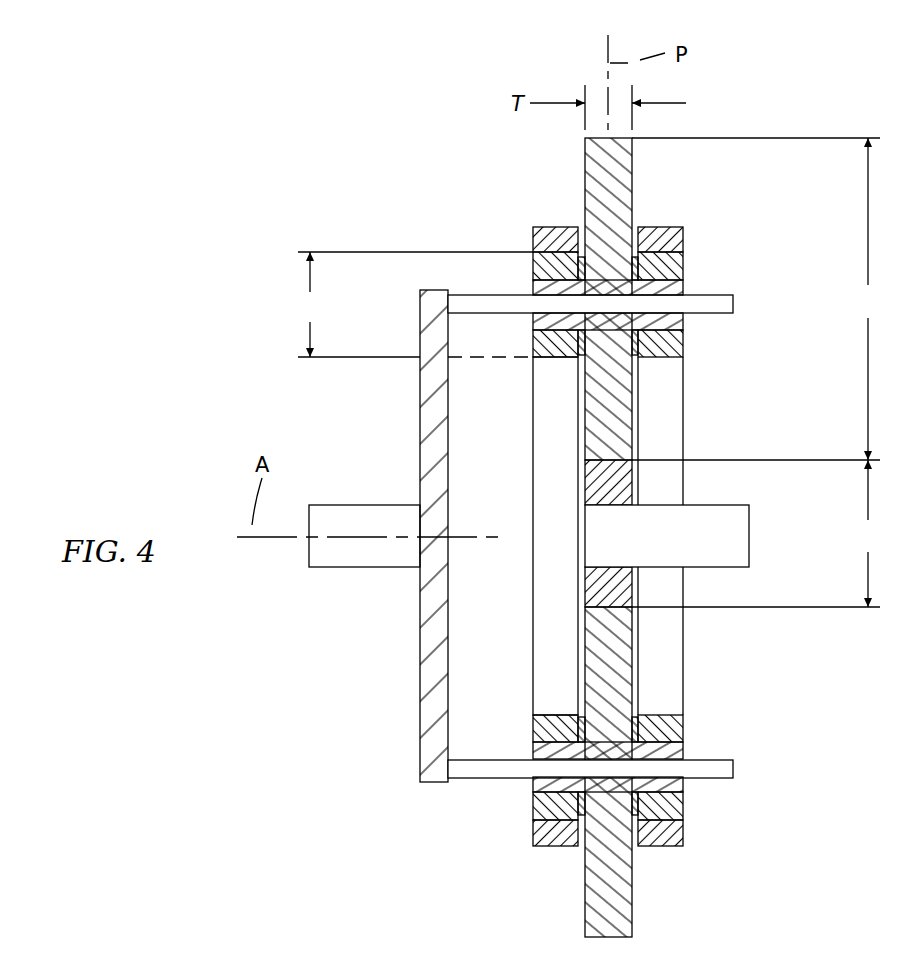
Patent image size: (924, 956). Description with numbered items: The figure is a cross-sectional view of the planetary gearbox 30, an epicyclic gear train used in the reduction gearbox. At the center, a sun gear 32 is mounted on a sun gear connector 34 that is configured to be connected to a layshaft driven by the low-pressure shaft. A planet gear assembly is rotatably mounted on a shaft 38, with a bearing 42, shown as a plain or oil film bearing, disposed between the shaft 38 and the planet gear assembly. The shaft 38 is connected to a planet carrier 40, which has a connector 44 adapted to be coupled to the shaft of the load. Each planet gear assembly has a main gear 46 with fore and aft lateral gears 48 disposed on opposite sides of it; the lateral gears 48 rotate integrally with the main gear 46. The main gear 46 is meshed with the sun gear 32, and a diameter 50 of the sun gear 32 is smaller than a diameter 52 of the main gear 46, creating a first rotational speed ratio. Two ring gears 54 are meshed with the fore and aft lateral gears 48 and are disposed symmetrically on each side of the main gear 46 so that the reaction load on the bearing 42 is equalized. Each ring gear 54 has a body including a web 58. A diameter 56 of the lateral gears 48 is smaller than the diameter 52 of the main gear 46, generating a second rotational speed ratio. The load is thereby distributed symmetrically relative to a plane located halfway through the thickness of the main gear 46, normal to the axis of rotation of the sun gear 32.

The planetary gearbox 30 is at (808, 112).
The sun gear 32 is at (607, 587).
The sun gear connector 34 is at (749, 537).
The shaft 38 is at (735, 768).
The planet carrier 40 is at (435, 308).
The bearing 42 is at (683, 287).
The connector 44 is at (337, 567).
The main gear 46 is at (620, 920).
The fore and aft lateral gears 48 is at (683, 262).
The diameter of the sun gear 50 is at (757, 533).
The diameter of the main gears 52 is at (757, 299).
The ring gear 54 is at (683, 230).
The diameter of the lateral gears 56 is at (415, 304).
The web 58 is at (660, 848).